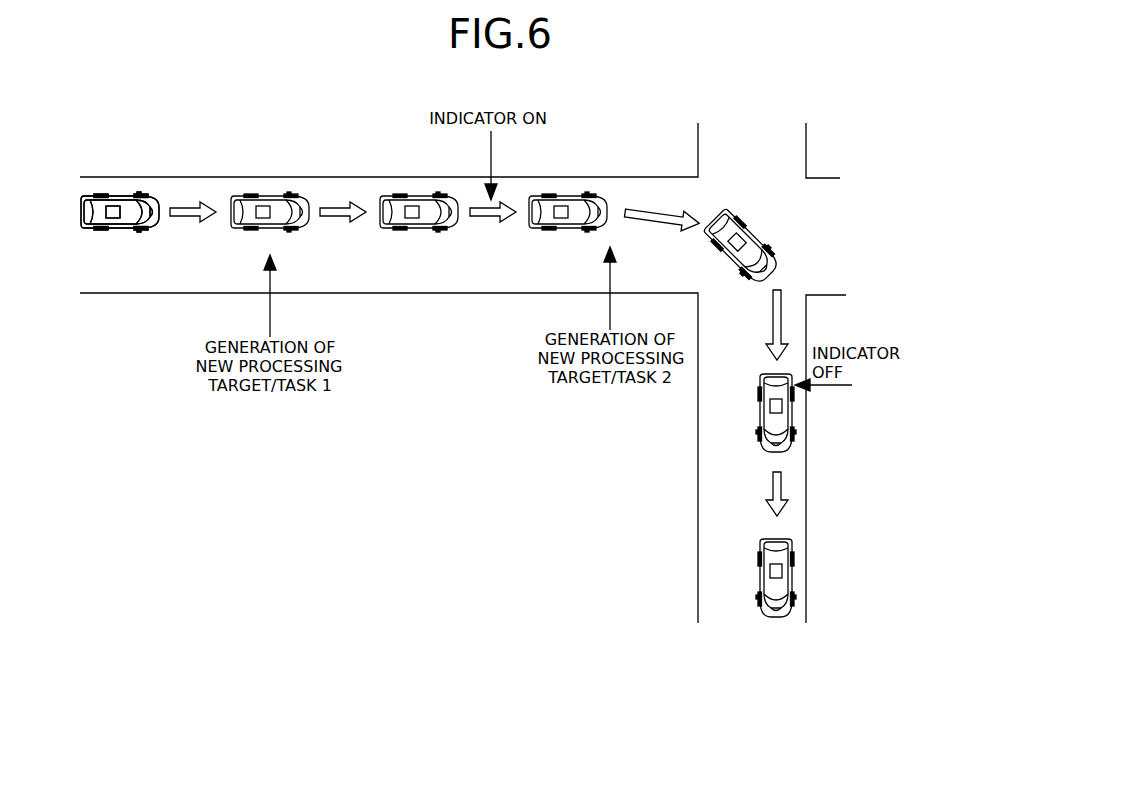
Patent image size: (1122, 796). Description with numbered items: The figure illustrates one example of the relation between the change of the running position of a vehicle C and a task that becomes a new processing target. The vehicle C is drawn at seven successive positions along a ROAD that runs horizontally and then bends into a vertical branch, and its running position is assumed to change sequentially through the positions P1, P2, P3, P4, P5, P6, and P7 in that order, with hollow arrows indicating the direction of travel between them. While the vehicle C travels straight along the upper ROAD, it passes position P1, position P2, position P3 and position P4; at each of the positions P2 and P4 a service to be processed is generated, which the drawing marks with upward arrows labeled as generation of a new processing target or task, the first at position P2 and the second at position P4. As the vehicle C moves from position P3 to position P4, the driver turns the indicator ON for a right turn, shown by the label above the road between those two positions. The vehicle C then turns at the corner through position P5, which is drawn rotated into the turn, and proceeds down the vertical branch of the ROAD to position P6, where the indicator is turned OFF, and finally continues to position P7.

The vehicle C is at (112, 194).
The position P1 is at (146, 194).
The position P2 is at (294, 195).
The position P3 is at (446, 194).
The position P4 is at (591, 192).
The position P5 is at (745, 222).
The position P6 is at (795, 412).
The position P7 is at (795, 575).
The road ROAD is at (826, 186).